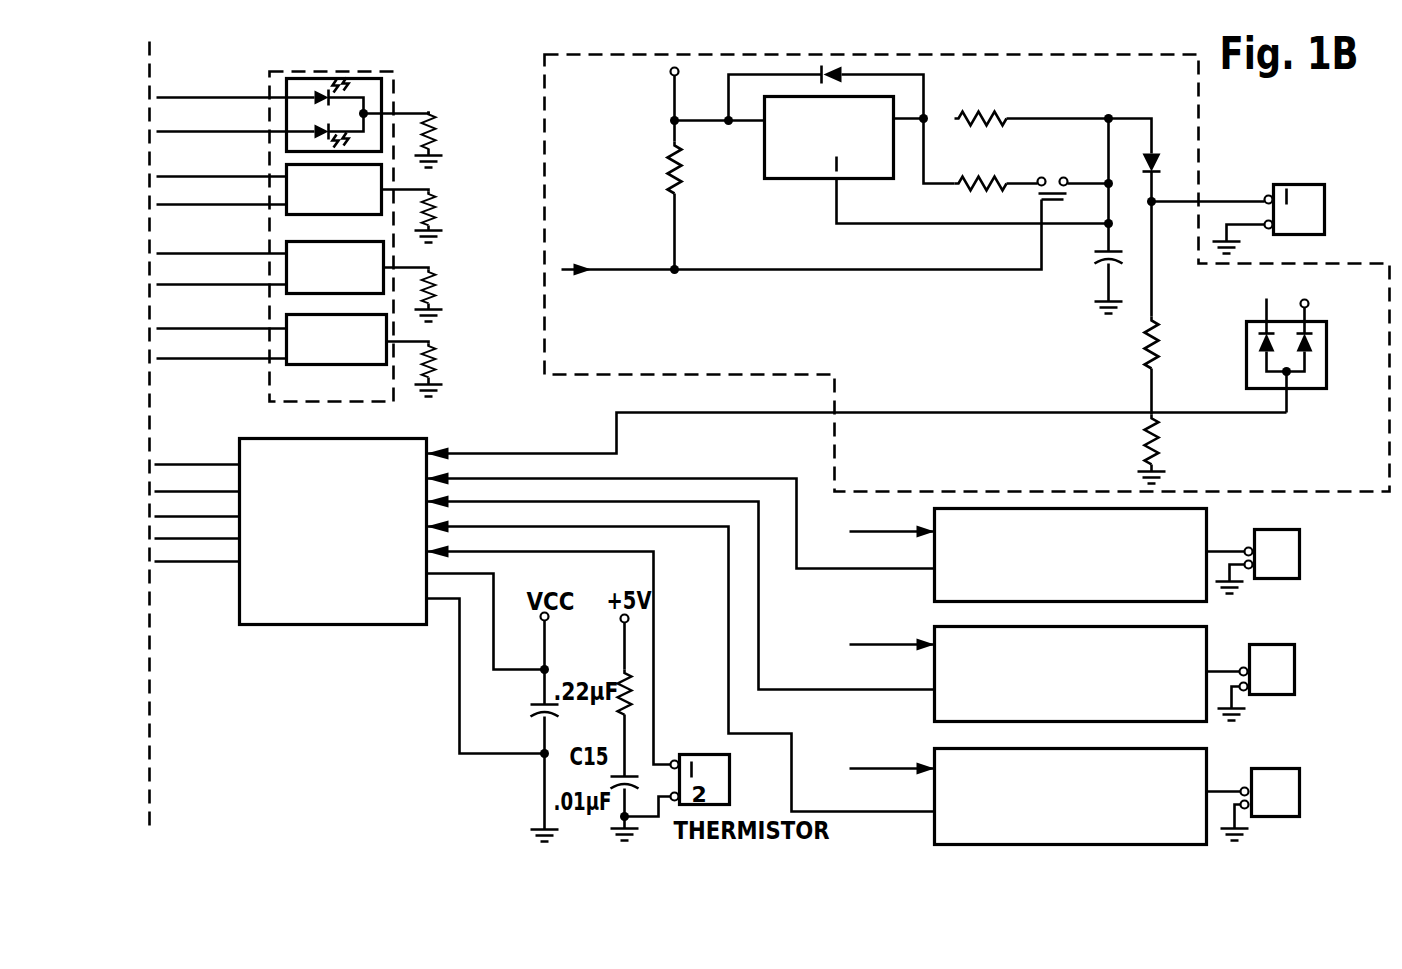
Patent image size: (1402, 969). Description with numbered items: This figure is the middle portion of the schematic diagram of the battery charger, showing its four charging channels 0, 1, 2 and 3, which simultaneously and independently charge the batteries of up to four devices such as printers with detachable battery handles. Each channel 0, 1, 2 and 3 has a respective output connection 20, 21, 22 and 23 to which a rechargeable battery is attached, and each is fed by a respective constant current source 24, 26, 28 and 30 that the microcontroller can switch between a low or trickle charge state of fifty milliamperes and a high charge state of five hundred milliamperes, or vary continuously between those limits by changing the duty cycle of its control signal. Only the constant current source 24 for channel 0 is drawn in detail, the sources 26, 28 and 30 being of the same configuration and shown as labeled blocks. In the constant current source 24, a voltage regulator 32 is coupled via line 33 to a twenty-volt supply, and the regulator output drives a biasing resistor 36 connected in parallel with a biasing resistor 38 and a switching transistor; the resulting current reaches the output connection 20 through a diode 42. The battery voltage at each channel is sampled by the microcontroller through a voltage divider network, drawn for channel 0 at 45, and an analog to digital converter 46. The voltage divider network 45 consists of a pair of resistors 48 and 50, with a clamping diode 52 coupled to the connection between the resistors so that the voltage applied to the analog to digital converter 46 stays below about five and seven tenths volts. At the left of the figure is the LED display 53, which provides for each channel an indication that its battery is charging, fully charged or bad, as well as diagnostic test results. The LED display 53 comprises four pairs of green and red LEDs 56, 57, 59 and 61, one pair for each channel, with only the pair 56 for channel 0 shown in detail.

The channel 0 is at (1282, 124).
The channel 1 is at (1322, 528).
The channel 2 is at (1325, 626).
The channel 3 is at (1322, 746).
The output connection 20 is at (1323, 193).
The output connection 21 is at (1298, 557).
The output connection 22 is at (1293, 668).
The output connection 23 is at (1298, 785).
The constant current source 24 is at (967, 273).
The constant current source 26 is at (940, 583).
The constant current source 28 is at (940, 703).
The constant current source 30 is at (940, 823).
The voltage regulator 32 is at (763, 147).
The line 33 is at (670, 95).
The biasing resistor 36 is at (993, 110).
The biasing resistor 38 is at (993, 180).
The diode 42 is at (1157, 158).
The voltage divider network 45 is at (1060, 418).
The analog to digital converter 46 is at (412, 437).
The resistor 48 is at (1162, 340).
The resistor 50 is at (1146, 440).
The clamping diode 52 is at (1340, 386).
The LED display 53 is at (273, 383).
The pair of green and red LEDs 56 is at (385, 327).
The pair of green and red LEDs 57 is at (382, 252).
The pair of green and red LEDs 59 is at (380, 176).
The pair of green and red LEDs 61 is at (392, 95).